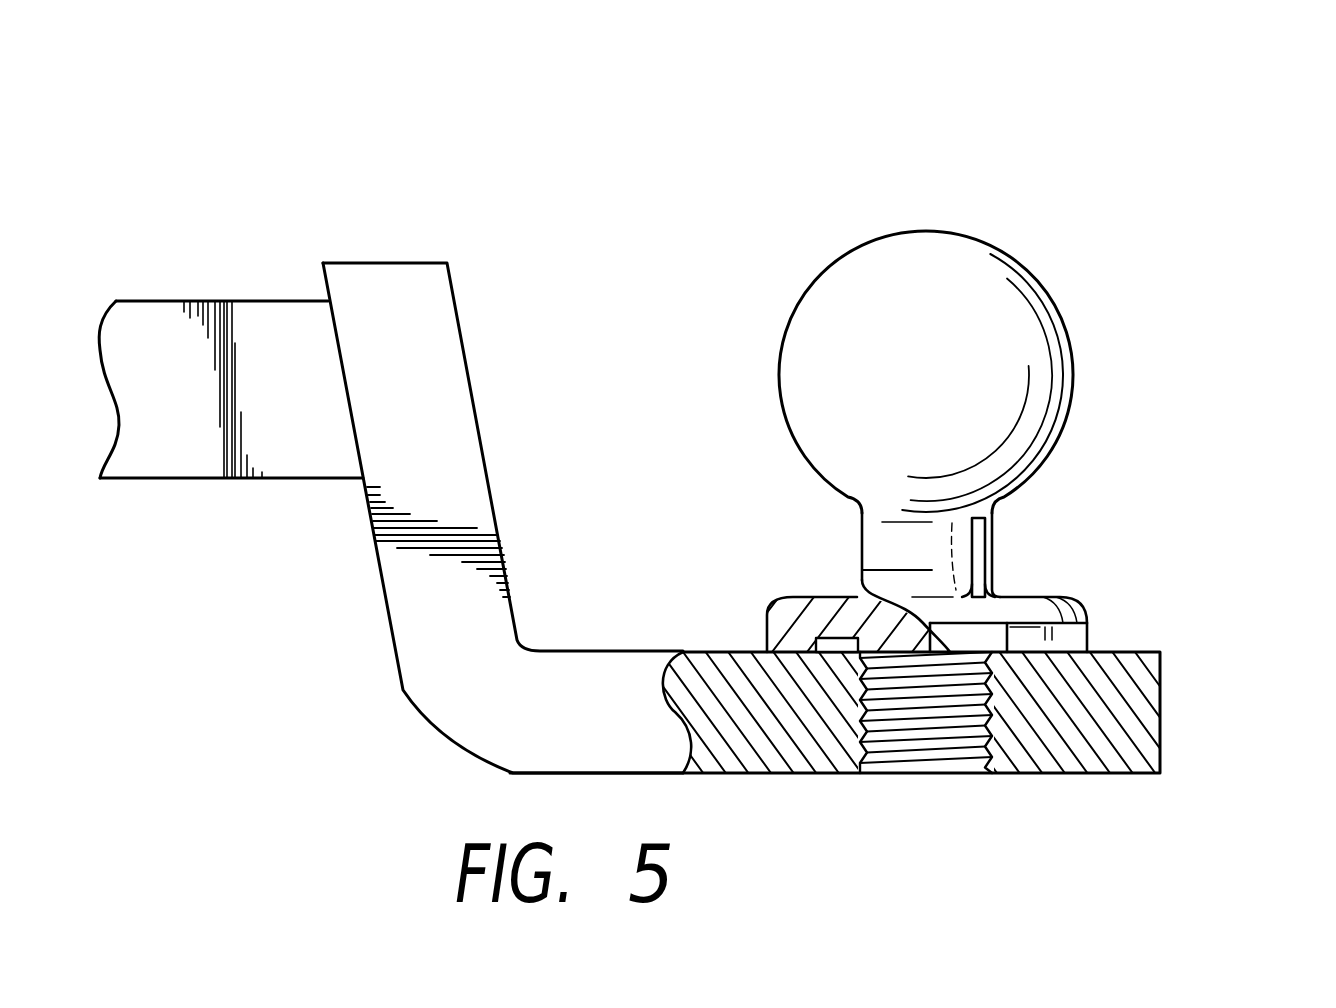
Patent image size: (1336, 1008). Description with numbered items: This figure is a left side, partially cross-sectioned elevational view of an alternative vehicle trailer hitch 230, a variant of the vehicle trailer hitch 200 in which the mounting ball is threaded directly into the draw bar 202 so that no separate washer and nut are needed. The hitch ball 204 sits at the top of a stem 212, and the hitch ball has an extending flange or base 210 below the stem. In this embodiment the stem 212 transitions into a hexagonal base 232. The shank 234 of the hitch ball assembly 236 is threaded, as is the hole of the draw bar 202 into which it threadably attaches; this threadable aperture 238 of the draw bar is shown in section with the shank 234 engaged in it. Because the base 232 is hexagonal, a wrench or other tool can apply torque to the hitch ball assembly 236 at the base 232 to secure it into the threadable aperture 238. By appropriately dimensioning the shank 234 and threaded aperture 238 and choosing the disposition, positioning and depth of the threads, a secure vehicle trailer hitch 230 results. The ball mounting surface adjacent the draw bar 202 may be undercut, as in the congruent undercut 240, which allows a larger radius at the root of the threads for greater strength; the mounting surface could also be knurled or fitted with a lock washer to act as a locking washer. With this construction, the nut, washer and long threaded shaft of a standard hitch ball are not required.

The vehicle trailer hitch 200 is at (157, 337).
The draw bar 202 is at (587, 688).
The hitch ball 204 is at (930, 290).
The flange or base 210 is at (1077, 597).
The stem 212 is at (962, 548).
The alternative vehicle trailer hitch 230 is at (468, 237).
The hexagonal base 232 is at (1067, 640).
The shank 234 is at (943, 730).
The hitch ball assembly 236 is at (1150, 370).
The threadable aperture 238 is at (997, 697).
The congruent undercut 240 is at (835, 640).